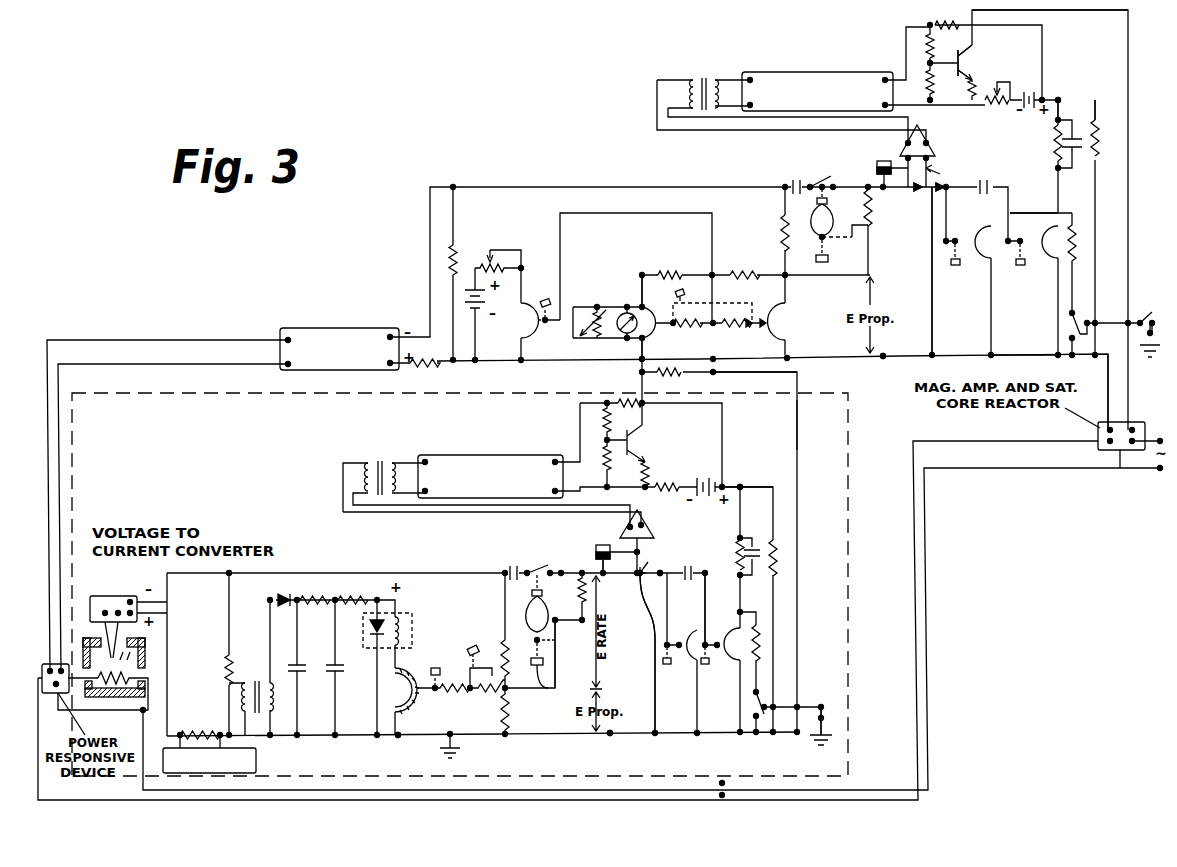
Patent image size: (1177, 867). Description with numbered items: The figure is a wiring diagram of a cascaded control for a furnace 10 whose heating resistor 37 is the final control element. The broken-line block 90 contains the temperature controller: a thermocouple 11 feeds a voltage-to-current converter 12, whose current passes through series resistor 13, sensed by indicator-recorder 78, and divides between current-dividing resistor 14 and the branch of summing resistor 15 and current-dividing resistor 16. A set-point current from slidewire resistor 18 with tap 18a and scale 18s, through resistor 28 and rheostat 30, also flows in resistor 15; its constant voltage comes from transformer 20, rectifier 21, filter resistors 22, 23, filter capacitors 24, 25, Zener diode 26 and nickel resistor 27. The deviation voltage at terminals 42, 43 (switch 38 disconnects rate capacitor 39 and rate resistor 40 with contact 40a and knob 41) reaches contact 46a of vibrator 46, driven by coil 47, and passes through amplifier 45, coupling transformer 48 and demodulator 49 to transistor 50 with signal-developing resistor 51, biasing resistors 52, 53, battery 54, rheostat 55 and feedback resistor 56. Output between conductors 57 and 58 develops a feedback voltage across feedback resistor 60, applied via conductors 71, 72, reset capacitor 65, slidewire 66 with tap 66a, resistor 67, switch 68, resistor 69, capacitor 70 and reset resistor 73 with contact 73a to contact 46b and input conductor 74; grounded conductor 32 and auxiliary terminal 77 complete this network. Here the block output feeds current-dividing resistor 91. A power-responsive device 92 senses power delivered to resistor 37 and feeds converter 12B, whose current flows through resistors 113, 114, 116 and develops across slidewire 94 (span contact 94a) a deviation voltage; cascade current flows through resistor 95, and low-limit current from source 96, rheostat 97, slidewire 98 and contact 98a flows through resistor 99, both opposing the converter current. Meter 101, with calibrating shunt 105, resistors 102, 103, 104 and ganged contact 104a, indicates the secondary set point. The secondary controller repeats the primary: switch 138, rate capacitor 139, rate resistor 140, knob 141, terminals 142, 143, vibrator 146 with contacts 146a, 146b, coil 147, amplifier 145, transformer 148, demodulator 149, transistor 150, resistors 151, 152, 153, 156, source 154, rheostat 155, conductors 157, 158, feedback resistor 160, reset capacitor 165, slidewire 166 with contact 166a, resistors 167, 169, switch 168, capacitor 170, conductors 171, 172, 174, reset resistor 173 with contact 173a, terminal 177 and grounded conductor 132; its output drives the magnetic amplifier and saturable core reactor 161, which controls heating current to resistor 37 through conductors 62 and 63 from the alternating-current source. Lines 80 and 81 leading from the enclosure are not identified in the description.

The furnace 10 is at (84, 648).
The thermocouple 11 is at (116, 658).
The voltage-to-current converter 12 is at (105, 597).
The voltage-to-current converter 12B is at (320, 328).
The series resistor 13 is at (200, 734).
The current-dividing resistor 14 is at (226, 662).
The summing resistor 15 is at (508, 705).
The current-dividing resistor 16 is at (505, 640).
The variable resistor 18 is at (418, 688).
The adjustable contact 18a is at (419, 692).
The scale 18s is at (399, 737).
The transformer 20 is at (252, 682).
The rectifier 21 is at (282, 598).
The filter resistor 22 is at (311, 598).
The filter resistor 23 is at (350, 598).
The filter capacitor 24 is at (299, 663).
The filter capacitor 25 is at (338, 675).
The Zener diode 26 is at (376, 640).
The nickel resistor 27 is at (412, 626).
The resistor 28 is at (472, 648).
The rheostat 30 is at (478, 690).
The grounded conductor 32 is at (797, 425).
The heating resistor 37 is at (104, 692).
The switch 38 is at (536, 567).
The rate capacitor 39 is at (508, 571).
The rate resistor 40 is at (568, 565).
The contact 40a is at (541, 660).
The rate-regulating knob 41 is at (553, 690).
The output terminal 42 is at (600, 570).
The output terminal 43 is at (610, 735).
The amplifier 45 is at (632, 520).
The vibrator 46 is at (650, 570).
The contact 46a is at (587, 581).
The contact 46b is at (654, 625).
The operating coil 47 is at (597, 547).
The coupling transformer 48 is at (382, 463).
The demodulator 49 is at (473, 455).
The transistor 50 is at (629, 454).
The signal-developing resistor 51 is at (604, 456).
The resistor 52 is at (604, 418).
The resistor 53 is at (636, 406).
The constant voltage source 54 is at (706, 480).
The rheostat 55 is at (673, 488).
The negative feedback resistor 56 is at (649, 472).
The output conductor 57 is at (655, 372).
The output conductor 58 is at (742, 490).
The feedback resistor 60 is at (779, 560).
The conductor 62 is at (978, 442).
The conductor 63 is at (1012, 468).
The reset capacitor 65 is at (690, 573).
The adjustable resistor 66 is at (727, 640).
The adjustable contact 66a is at (733, 656).
The resistor 67 is at (762, 640).
The switch 68 is at (755, 704).
The resistor 69 is at (738, 545).
The capacitor 70 is at (757, 550).
The conductor 71 is at (706, 586).
The conductor 72 is at (662, 573).
The reset resistor 73 is at (695, 661).
The contact 73a is at (681, 645).
The input conductor 74 is at (655, 735).
The input terminal 77 is at (824, 709).
The indicator-recorder 78 is at (256, 760).
The conductor 80 is at (722, 782).
The conductor 81 is at (722, 794).
The block 90 is at (74, 438).
The current-dividing resistor 91 is at (692, 378).
The power-responsive device 92 is at (48, 665).
The resistor 94 is at (786, 318).
The contact 94a is at (758, 326).
The resistor 95 is at (745, 322).
The source of supply 96 is at (470, 298).
The rheostat 97 is at (497, 262).
The slidewire 98 is at (530, 332).
The movable contact 98a is at (543, 326).
The resistor 99 is at (745, 270).
The meter 101 is at (627, 312).
The resistor 102 is at (688, 270).
The resistor 103 is at (682, 318).
The resistor 104 is at (654, 334).
The contact 104a is at (642, 295).
The calibrating shunt 105 is at (594, 310).
The resistor 113 is at (432, 366).
The resistor 114 is at (450, 260).
The resistor 116 is at (782, 230).
The grounded conductor 132 is at (1000, 356).
The switch 138 is at (825, 178).
The rate capacitor 139 is at (789, 186).
The rate resistor 140 is at (836, 186).
The rate-regulating knob 141 is at (827, 245).
The output terminal 142 is at (870, 232).
The output terminal 143 is at (883, 358).
The amplifier 145 is at (937, 146).
The vibrator 146 is at (941, 172).
The contact 146a is at (918, 192).
The contact 146b is at (942, 192).
The operating coil 147 is at (878, 158).
The coupling transformer 148 is at (696, 80).
The demodulator 149 is at (790, 72).
The transistor 150 is at (958, 82).
The signal-developing resistor 151 is at (927, 82).
The resistor 152 is at (926, 45).
The resistor 153 is at (942, 23).
The constant voltage source 154 is at (1026, 95).
The rheostat 155 is at (1000, 104).
The negative feedback resistor 156 is at (976, 86).
The output conductor 157 is at (1128, 10).
The output conductor 158 is at (1058, 99).
The feedback resistor 160 is at (1100, 142).
The magnetic amplifier and saturable core reactor 161 is at (1122, 452).
The reset capacitor 165 is at (1067, 160).
The adjustable resistor 166 is at (1046, 288).
The adjustable contact 166a is at (1021, 268).
The resistor 167 is at (1078, 240).
The switch 168 is at (1069, 326).
The resistor 169 is at (1059, 178).
The capacitor 170 is at (1096, 125).
The conductor 171 is at (1025, 212).
The conductor 172 is at (986, 181).
The reset resistor 173 is at (977, 240).
The contact 173a is at (958, 268).
The input conductor 174 is at (931, 328).
The input terminal 177 is at (1148, 318).